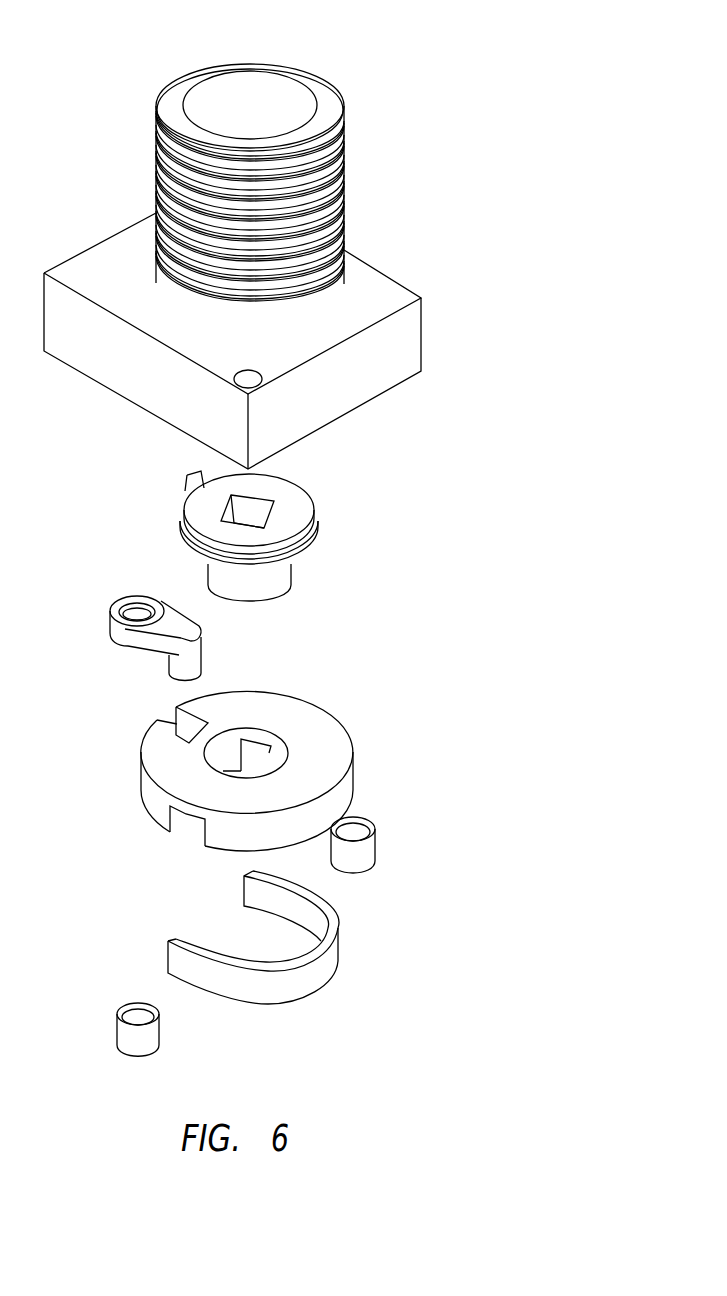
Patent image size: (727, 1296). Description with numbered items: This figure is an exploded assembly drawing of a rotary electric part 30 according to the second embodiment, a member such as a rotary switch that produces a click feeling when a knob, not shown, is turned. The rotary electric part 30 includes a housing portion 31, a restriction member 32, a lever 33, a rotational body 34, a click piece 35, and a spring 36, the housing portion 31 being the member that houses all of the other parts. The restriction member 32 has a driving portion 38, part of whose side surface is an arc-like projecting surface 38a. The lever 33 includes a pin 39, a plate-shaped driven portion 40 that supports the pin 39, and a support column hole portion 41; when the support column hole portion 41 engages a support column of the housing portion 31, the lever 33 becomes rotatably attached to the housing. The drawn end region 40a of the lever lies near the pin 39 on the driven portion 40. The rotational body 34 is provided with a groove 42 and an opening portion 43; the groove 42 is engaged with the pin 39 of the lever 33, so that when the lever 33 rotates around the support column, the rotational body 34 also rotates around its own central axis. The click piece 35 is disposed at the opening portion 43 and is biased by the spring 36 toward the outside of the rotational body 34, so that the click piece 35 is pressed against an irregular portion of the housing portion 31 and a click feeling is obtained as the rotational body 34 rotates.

The rotary electric part 30 is at (388, 37).
The housing portion 31 is at (82, 262).
The restriction member 32 is at (275, 487).
The lever 33 is at (112, 633).
The rotational body 34 is at (328, 732).
The click piece 35 is at (357, 825).
The spring 36 is at (310, 980).
The driving portion 38 is at (310, 553).
The arc-like projecting surface 38a is at (193, 558).
The pin 39 is at (200, 662).
The driven portion 40 is at (155, 650).
The arm end 40a is at (165, 647).
The support column hole portion 41 is at (137, 610).
The groove 42 is at (177, 725).
The opening portion 43 is at (182, 823).